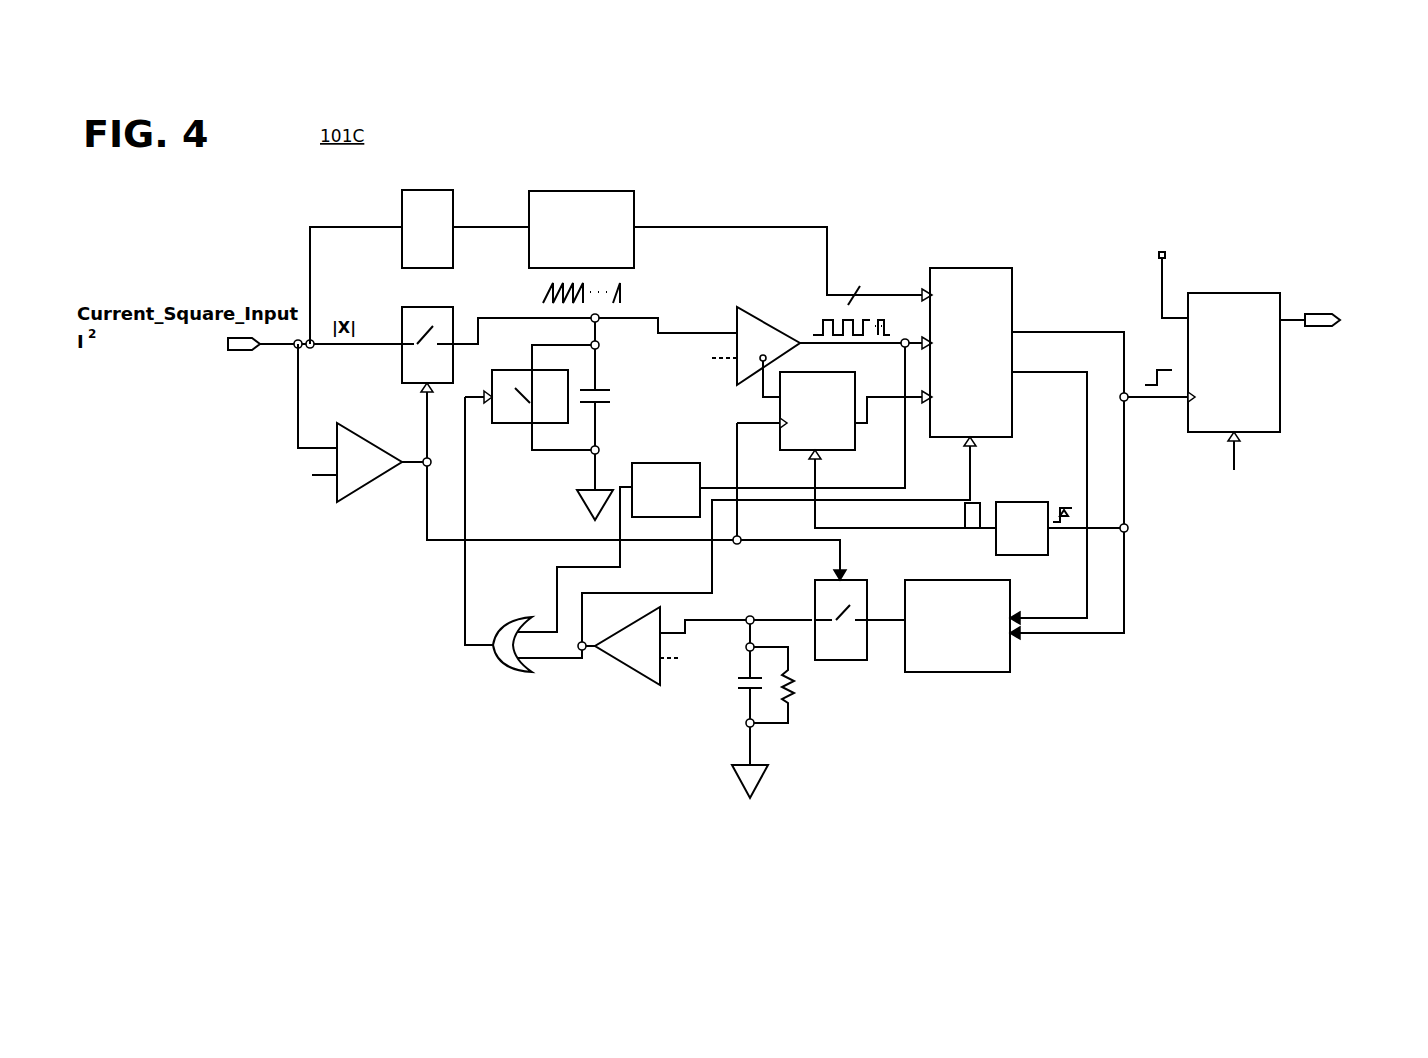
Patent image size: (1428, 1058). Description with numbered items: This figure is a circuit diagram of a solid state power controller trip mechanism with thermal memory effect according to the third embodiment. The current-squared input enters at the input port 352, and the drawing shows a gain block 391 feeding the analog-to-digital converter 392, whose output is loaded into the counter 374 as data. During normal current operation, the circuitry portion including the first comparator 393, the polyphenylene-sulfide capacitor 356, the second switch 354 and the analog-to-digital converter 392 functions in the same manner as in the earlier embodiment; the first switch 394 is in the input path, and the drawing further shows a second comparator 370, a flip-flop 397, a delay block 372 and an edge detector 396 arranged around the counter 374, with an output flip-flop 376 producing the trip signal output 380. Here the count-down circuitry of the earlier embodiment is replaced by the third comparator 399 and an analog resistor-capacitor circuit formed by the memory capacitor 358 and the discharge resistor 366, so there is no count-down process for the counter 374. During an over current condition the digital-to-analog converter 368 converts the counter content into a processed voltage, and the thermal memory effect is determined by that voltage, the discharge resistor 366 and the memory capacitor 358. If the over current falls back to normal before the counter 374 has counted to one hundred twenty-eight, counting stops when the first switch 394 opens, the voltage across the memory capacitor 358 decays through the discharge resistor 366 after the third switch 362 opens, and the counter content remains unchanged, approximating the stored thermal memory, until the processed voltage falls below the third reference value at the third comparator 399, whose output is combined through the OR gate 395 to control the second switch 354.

The current square input port 352 is at (241, 363).
The gain block K 391 is at (394, 254).
The ADC 392 is at (646, 213).
The switch SW1 394 is at (394, 374).
The comparator 393 is at (379, 490).
The switch SW2 354 is at (507, 434).
The PPS capacitor C12 356 is at (606, 383).
The comparator with reference Ref2 370 is at (781, 316).
The D flip-flop 397 is at (852, 458).
The delay block 372 is at (667, 528).
The counter 374 is at (964, 260).
The edge detector 396 is at (1032, 563).
The DAC 368 is at (957, 680).
The output D flip-flop 376 is at (1229, 285).
The trip signal output port 380 is at (1331, 331).
The OR gate 395 is at (487, 661).
The comparator 399 is at (624, 672).
The capacitor C33 358 is at (741, 704).
The resistor R44 366 is at (807, 699).
The switch SW3 362 is at (864, 667).